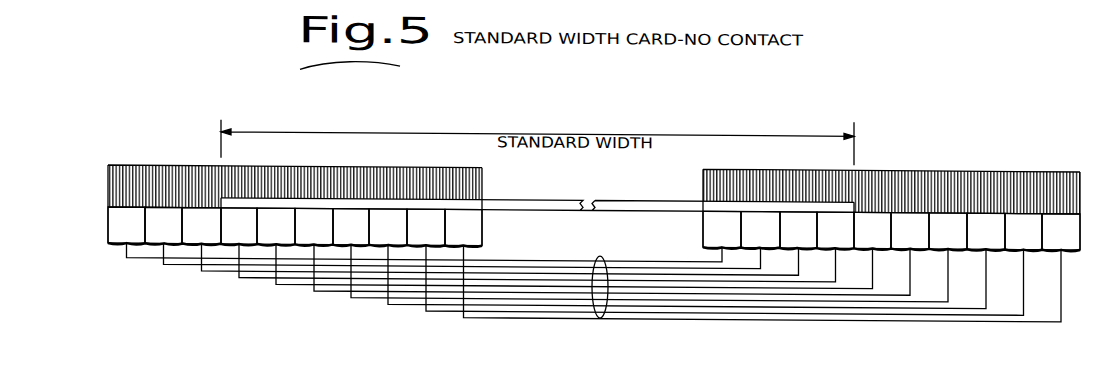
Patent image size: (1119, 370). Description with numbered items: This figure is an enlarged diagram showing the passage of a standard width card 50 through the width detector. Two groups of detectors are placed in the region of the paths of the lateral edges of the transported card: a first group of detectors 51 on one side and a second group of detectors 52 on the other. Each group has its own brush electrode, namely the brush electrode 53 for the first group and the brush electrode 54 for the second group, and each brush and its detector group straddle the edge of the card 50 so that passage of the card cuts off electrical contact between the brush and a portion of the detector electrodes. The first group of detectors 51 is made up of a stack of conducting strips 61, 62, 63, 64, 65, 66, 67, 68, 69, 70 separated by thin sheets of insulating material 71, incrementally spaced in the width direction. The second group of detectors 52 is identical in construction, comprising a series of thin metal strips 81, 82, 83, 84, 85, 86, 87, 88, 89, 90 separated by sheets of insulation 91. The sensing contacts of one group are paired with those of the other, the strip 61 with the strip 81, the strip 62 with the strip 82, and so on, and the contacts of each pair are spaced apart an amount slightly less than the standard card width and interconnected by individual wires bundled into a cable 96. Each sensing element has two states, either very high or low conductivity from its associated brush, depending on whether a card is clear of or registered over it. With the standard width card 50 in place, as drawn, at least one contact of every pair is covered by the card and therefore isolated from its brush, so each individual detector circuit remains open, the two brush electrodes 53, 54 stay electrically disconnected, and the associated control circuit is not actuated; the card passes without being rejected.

The card 50 is at (530, 196).
The first group of detectors 51 is at (255, 199).
The second group of detectors 52 is at (852, 221).
The brush electrode 53 is at (157, 165).
The brush electrode 54 is at (1040, 165).
The conducting strip 61 is at (126, 225).
The conducting strip 62 is at (163, 225).
The conducting strip 63 is at (201, 226).
The conducting strip 64 is at (239, 226).
The conducting strip 65 is at (276, 226).
The conducting strip 66 is at (314, 226).
The conducting strip 67 is at (351, 227).
The conducting strip 68 is at (388, 227).
The conducting strip 69 is at (426, 227).
The conducting strip 70 is at (463, 227).
The sheets of insulating material 71 is at (176, 232).
The metal strip 81 is at (722, 229).
The metal strip 82 is at (760, 230).
The metal strip 83 is at (798, 230).
The metal strip 84 is at (835, 230).
The metal strip 85 is at (872, 230).
The metal strip 86 is at (910, 231).
The metal strip 87 is at (948, 231).
The metal strip 88 is at (986, 231).
The metal strip 89 is at (1023, 231).
The metal strip 90 is at (1061, 232).
The sheets of insulation 91 is at (1048, 243).
The cable 96 is at (600, 314).